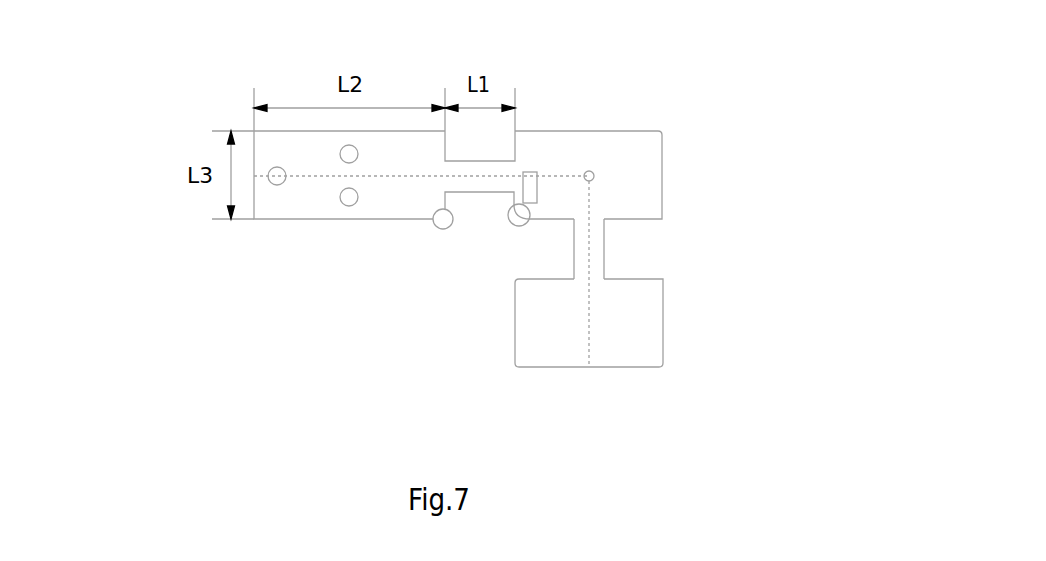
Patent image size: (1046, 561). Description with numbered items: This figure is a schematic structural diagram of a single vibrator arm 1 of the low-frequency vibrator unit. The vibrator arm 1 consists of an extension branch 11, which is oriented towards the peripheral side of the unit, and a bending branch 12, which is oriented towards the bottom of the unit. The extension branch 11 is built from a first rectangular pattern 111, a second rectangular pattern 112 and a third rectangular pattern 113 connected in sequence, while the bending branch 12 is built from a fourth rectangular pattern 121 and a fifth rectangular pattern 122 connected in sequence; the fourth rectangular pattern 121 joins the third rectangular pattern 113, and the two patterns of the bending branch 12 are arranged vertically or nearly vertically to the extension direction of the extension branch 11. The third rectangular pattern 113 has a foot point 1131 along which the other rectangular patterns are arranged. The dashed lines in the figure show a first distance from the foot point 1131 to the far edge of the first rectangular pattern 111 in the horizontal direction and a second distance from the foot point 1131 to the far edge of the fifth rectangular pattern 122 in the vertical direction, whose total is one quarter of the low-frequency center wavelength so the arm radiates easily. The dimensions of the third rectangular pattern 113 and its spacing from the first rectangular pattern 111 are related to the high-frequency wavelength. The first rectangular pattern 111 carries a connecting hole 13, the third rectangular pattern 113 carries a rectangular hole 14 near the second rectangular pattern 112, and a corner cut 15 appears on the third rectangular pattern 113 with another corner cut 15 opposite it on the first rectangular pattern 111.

The vibrator arm 1 is at (133, 152).
The extension branch 11 is at (160, 280).
The first rectangular pattern 111 is at (310, 210).
The second rectangular pattern 112 is at (458, 167).
The third rectangular pattern 113 is at (528, 150).
The foot point 1131 is at (593, 172).
The bending branch 12 is at (813, 138).
The fourth rectangular pattern 121 is at (600, 270).
The fifth rectangular pattern 122 is at (648, 308).
The connecting hole 13 is at (271, 170).
The rectangular hole 14 is at (531, 183).
The corner cut 15 is at (447, 210).